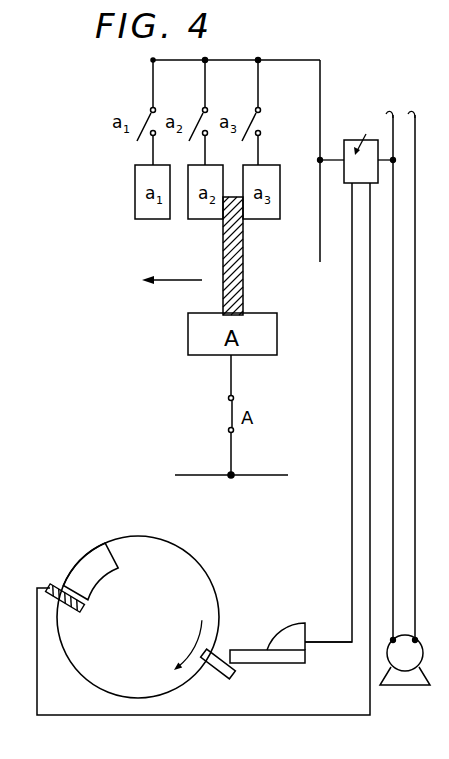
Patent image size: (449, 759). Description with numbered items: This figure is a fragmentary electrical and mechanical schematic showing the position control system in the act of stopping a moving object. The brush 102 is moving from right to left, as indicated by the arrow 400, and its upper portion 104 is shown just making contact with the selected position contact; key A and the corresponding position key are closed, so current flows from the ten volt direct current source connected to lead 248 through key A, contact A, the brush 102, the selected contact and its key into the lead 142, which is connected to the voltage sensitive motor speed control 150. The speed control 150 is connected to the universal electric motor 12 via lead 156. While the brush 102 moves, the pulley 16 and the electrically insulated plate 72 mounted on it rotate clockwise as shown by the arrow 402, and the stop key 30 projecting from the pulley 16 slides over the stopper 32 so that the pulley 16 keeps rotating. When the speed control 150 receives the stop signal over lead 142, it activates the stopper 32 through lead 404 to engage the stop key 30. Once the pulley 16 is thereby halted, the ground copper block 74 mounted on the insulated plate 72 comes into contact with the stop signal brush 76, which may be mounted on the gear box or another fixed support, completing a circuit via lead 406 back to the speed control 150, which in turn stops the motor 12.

The lead 142 is at (290, 60).
The voltage sensitive motor speed control 150 is at (375, 140).
The lead 156 is at (393, 212).
The brush 102 is at (250, 282).
The upper portion of the brush 104 is at (233, 222).
The arrow 400 is at (183, 282).
The lead 248 is at (246, 478).
The pulley 16 is at (198, 560).
The electrically insulated plate 72 is at (177, 602).
The arrow 402 is at (195, 650).
The ground copper block 74 is at (95, 562).
The stop signal brush 76 is at (59, 590).
The stop key 30 is at (212, 673).
The stopper 32 is at (276, 664).
The lead 404 is at (351, 589).
The lead 406 is at (316, 716).
The universal electric motor 12 is at (419, 640).